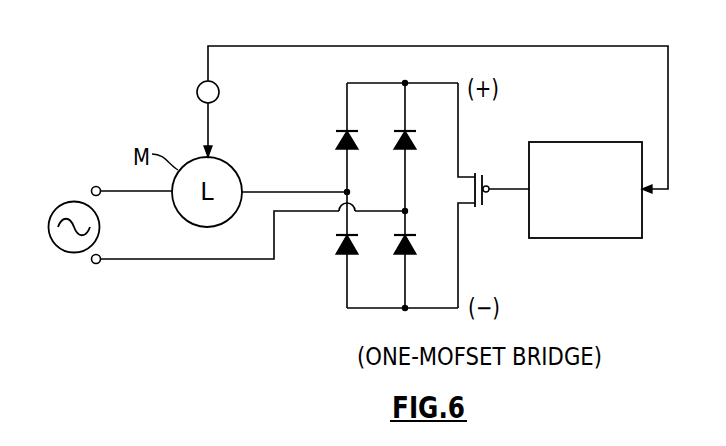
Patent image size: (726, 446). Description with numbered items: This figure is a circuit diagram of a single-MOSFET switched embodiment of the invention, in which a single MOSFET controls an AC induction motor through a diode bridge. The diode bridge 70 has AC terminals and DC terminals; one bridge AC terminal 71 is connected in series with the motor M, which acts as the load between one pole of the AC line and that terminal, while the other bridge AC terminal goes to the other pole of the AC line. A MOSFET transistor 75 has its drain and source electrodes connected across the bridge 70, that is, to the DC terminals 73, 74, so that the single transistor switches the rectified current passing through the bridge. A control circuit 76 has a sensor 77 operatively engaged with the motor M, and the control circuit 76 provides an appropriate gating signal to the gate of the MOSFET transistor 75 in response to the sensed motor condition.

The diode bridge 70 is at (340, 165).
The AC terminal 71 is at (346, 190).
The DC terminal 73 is at (392, 83).
The DC terminal 74 is at (364, 308).
The MOSFET transistor 75 is at (478, 170).
The control circuit 76 is at (566, 142).
The sensor 77 is at (197, 89).